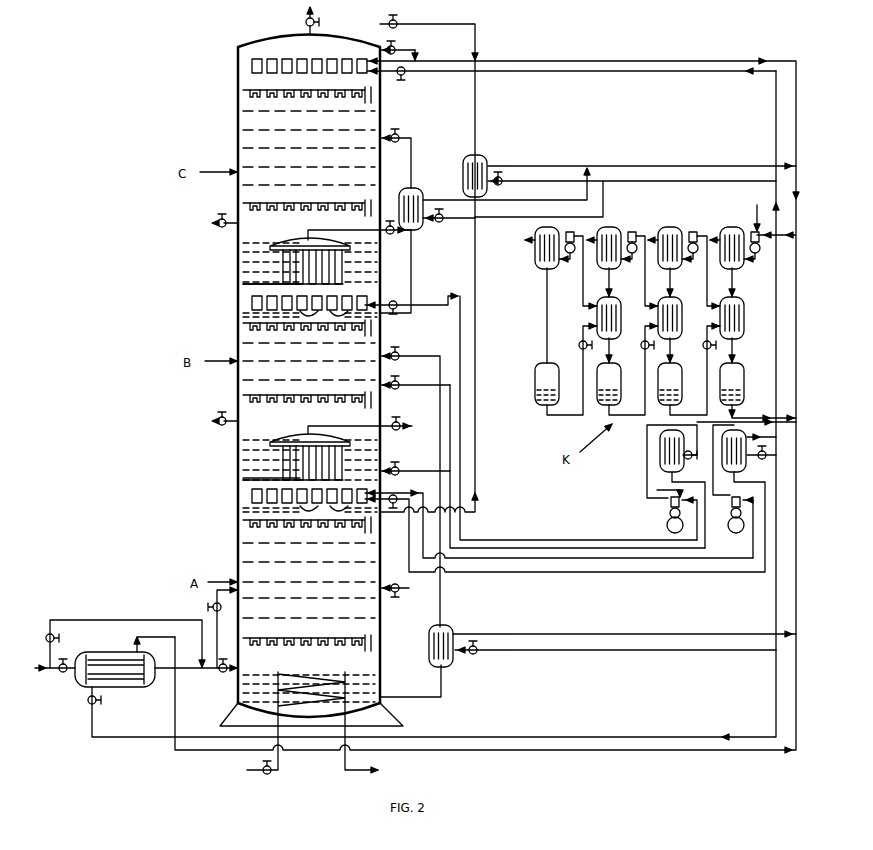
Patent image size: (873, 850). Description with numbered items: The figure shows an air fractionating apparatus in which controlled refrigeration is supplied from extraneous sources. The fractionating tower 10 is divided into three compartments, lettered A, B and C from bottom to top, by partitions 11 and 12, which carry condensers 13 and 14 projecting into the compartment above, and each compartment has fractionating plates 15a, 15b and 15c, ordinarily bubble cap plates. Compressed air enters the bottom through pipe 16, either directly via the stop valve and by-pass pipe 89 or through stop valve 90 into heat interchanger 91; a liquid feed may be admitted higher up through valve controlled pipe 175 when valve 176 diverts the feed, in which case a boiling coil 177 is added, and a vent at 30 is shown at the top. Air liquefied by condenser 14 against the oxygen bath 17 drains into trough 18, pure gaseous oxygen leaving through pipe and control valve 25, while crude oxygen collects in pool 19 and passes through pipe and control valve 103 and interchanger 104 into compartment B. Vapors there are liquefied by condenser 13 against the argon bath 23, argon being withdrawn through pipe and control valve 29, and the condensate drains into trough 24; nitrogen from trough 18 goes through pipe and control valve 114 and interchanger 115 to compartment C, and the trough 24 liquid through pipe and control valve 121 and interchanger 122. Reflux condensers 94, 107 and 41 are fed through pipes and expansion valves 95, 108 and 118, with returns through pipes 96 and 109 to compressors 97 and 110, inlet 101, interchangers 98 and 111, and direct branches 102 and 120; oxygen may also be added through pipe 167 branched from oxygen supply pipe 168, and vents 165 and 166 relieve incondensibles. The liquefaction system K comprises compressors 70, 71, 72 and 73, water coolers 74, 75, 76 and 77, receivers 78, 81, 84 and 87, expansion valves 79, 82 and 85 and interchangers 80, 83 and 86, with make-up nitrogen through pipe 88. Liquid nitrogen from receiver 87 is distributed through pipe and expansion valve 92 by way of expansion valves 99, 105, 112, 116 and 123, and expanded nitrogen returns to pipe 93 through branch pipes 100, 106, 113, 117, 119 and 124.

The fractionating tower 10 is at (248, 43).
The partition 11 is at (240, 284).
The partition 12 is at (242, 478).
The condenser 13 is at (282, 271).
The condenser 14 is at (280, 461).
The fractionating plates 15a is at (246, 527).
The fractionating plates 15b is at (246, 327).
The fractionating plates 15c is at (246, 92).
The pipe 16 is at (44, 669).
The bath of pure oxygen 17 is at (238, 440).
The trough 18 is at (292, 515).
The pool 19 is at (238, 688).
The bath of pure liquid argon 23 is at (238, 246).
The trough 24 is at (292, 316).
The pipe and control valve 25 is at (213, 420).
The pipe and control valve 29 is at (213, 222).
The vent valve 30 is at (306, 14).
The reflux condenser 41 is at (250, 67).
The compressor 70 is at (578, 270).
The compressor 71 is at (639, 270).
The compressor 72 is at (701, 270).
The compressor 73 is at (754, 254).
The water cooler 74 is at (540, 295).
The water cooler 75 is at (602, 262).
The water cooler 76 is at (664, 262).
The water cooler 77 is at (726, 262).
The receiver 78 is at (542, 364).
The pipe and expansion valve 79 is at (580, 346).
The interchanger 80 is at (597, 318).
The receiver 81 is at (608, 364).
The pipe and expansion valve 82 is at (644, 346).
The interchanger 83 is at (658, 318).
The receiver 84 is at (670, 364).
The pipe and expansion valve 85 is at (706, 346).
The interchanger 86 is at (720, 318).
The receiver 87 is at (732, 364).
The pipe 88 is at (757, 218).
The stop valve and by-pass pipe 89 is at (55, 634).
The stop valve 90 is at (59, 676).
The heat interchanger 91 is at (124, 656).
The pipe and expansion valve 92 is at (96, 702).
The pipe 93 is at (176, 705).
The reflux condenser 94 is at (250, 498).
The pipe and expansion valve 95 is at (380, 494).
The pipe 96 is at (754, 546).
The air compressor 97 is at (732, 527).
The interchanger 98 is at (732, 422).
The pipe and expansion valve 99 is at (761, 448).
The branch pipe 100 is at (765, 432).
The inlet 101 is at (744, 474).
The expansion valve and pipe 102 is at (410, 586).
The pipe and control valve 103 is at (399, 356).
The interchanger 104 is at (446, 630).
The pipe and expansion valve 105 is at (475, 654).
The branch pipe 106 is at (508, 637).
The reflux condenser 107 is at (250, 301).
The pipe and expansion valve 108 is at (386, 288).
The pipe 109 is at (452, 294).
The compressor 110 is at (668, 504).
The interchanger 111 is at (660, 453).
The pipe and expansion valve 112 is at (684, 468).
The branch pipe 113 is at (702, 454).
The pipe and control valve 114 is at (429, 270).
The interchanger 115 is at (463, 182).
The pipe and expansion valve 116 is at (500, 182).
The branch pipe 117 is at (542, 171).
The pipe and expansion valve 118 is at (608, 71).
The branch pipe 119 is at (656, 62).
The control valve and pipe 120 is at (398, 52).
The pipe and control valve 121 is at (397, 138).
The interchanger 122 is at (406, 192).
The pipe and expansion valve 123 is at (439, 222).
The pipe 124 is at (516, 202).
The valve controlled vent 165 is at (368, 422).
The valve controlled vent 166 is at (359, 235).
The expansion valve and pipe 167 is at (399, 471).
The oxygen supply pipe 168 is at (399, 385).
The valve controlled pipe 175 is at (208, 600).
The valve 176 is at (222, 704).
The boiling coil 177 is at (300, 673).